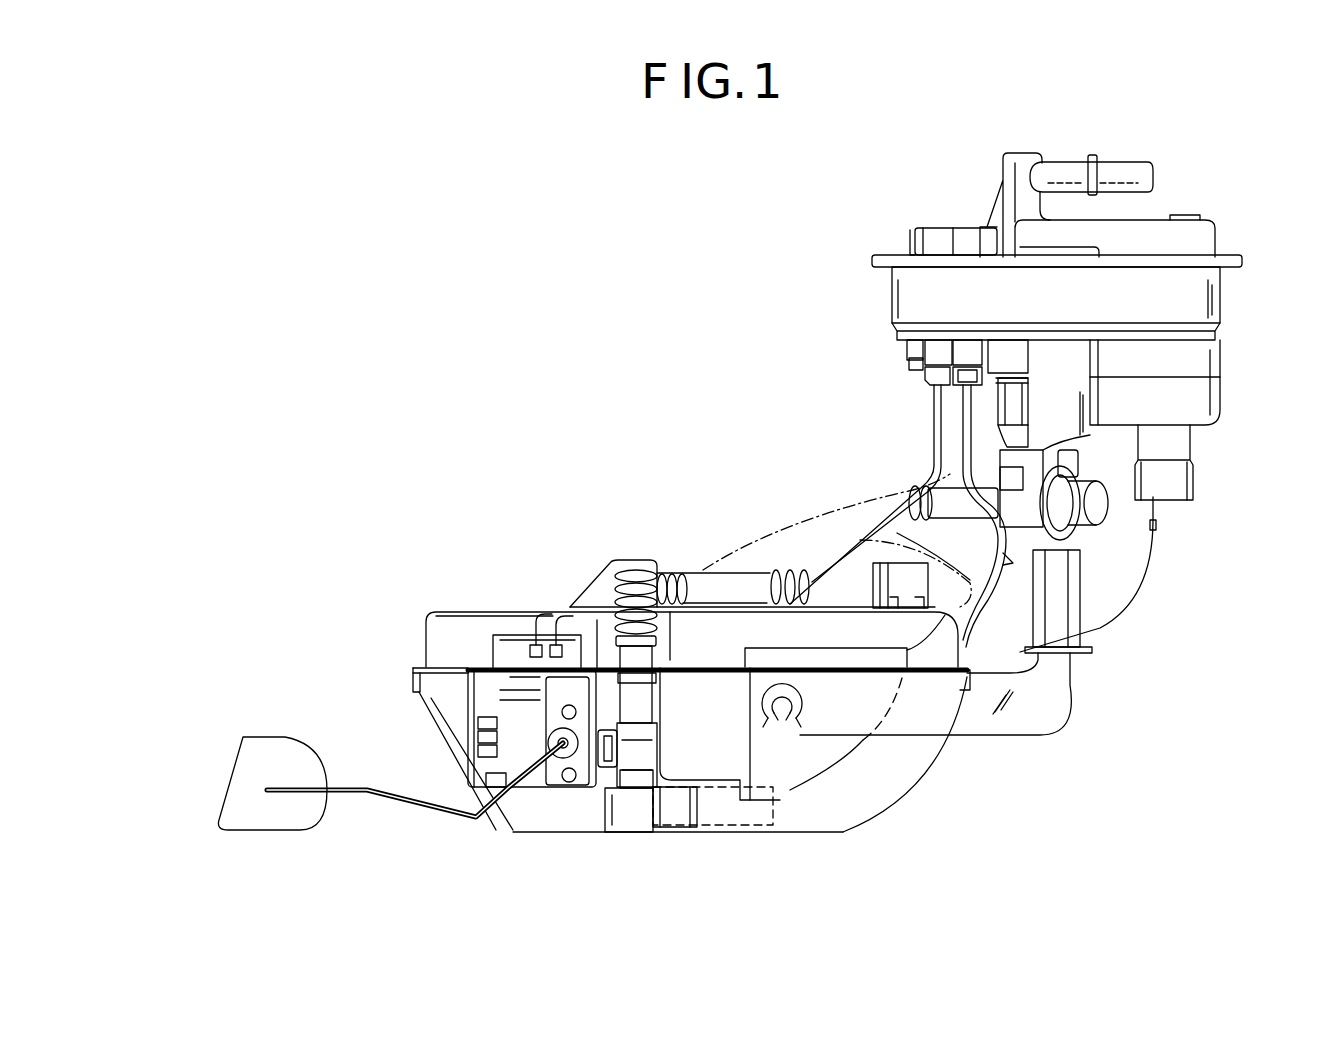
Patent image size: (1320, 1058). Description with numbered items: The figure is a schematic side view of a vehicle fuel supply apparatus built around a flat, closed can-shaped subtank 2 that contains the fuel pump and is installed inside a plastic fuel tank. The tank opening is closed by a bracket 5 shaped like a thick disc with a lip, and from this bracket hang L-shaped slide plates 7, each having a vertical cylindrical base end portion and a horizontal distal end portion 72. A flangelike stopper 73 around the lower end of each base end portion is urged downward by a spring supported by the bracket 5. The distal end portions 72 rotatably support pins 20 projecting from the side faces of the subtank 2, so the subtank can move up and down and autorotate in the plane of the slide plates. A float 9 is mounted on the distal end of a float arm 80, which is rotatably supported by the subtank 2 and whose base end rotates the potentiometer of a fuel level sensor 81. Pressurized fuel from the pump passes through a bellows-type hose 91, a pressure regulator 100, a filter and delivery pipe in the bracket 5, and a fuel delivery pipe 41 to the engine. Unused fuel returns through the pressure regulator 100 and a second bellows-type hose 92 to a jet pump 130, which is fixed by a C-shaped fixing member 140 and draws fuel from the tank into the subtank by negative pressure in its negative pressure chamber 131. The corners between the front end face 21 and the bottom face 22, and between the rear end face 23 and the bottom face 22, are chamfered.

The subtank 2 is at (705, 695).
The bracket 5 is at (915, 292).
The L-shaped slide plate 7 is at (1040, 707).
The float 9 is at (262, 745).
The pin 20 is at (788, 725).
The front end face 21 is at (447, 777).
The bottom face 22 is at (592, 835).
The rear end face 23 is at (917, 778).
The fuel delivery pipe 41 is at (1130, 168).
The distal end portion 72 is at (820, 708).
The stopper 73 is at (1077, 668).
The float arm 80 is at (367, 790).
The fuel level sensor 81 is at (517, 720).
The bellows-type hose 91 is at (840, 517).
The bellows-type hose 92 is at (957, 498).
The pressure regulator 100 is at (1097, 508).
The jet pump 130 is at (632, 818).
The negative pressure chamber 131 is at (678, 825).
The C-shaped fixing member 140 is at (608, 772).